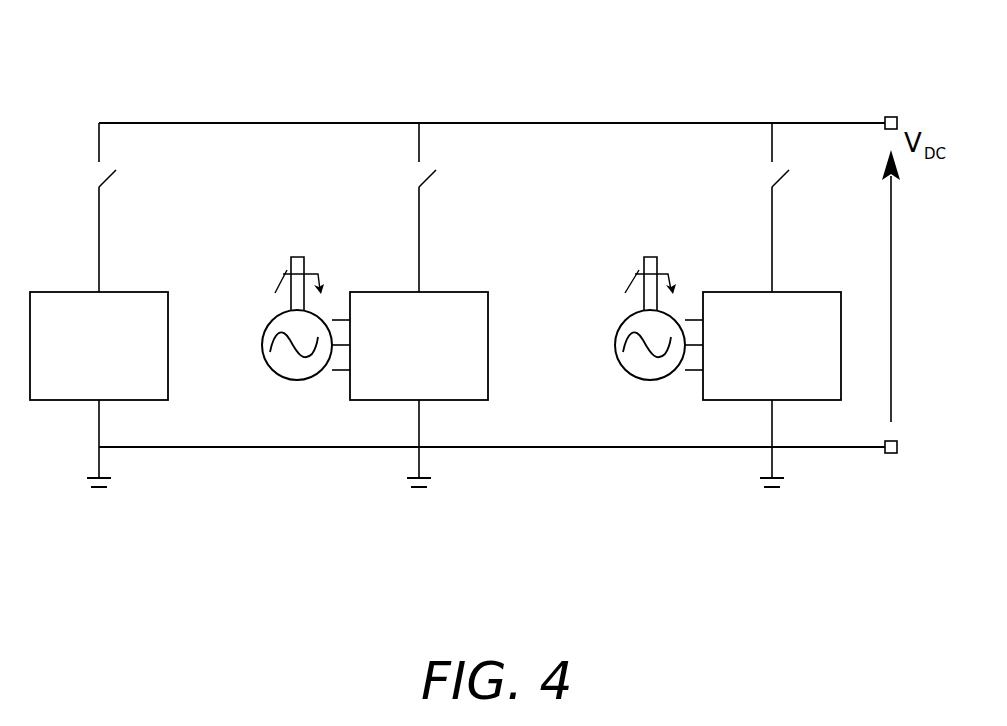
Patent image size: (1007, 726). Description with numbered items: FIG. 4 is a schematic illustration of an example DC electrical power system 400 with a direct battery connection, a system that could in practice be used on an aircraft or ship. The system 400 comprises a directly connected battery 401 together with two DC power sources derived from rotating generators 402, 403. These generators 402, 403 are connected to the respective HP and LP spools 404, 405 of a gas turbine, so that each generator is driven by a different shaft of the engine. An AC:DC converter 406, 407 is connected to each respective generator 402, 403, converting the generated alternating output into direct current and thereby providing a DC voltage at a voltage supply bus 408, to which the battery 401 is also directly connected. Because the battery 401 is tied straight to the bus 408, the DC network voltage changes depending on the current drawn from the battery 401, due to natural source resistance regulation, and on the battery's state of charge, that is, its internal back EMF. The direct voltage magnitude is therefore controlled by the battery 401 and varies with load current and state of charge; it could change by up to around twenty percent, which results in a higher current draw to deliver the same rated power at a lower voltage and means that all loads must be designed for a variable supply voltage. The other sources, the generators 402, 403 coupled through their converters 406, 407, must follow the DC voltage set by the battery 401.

The DC electrical power system 400 is at (189, 53).
The battery 401 is at (99, 305).
The rotating generator 402 is at (265, 357).
The rotating generator 403 is at (618, 357).
The HP spool 404 is at (283, 274).
The LP spool 405 is at (635, 274).
The AC:DC converter 406 is at (419, 305).
The AC:DC converter 407 is at (772, 305).
The voltage supply bus 408 is at (573, 122).